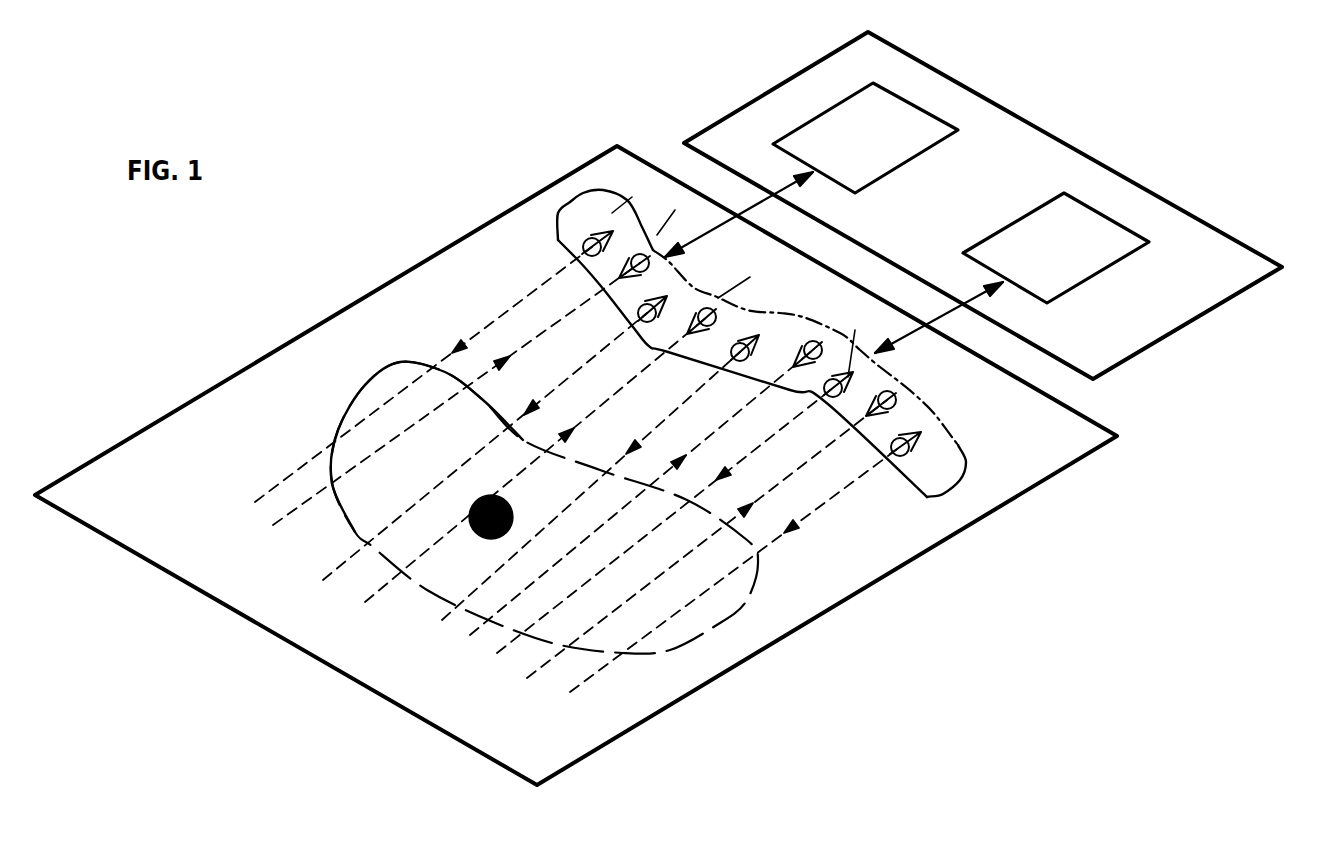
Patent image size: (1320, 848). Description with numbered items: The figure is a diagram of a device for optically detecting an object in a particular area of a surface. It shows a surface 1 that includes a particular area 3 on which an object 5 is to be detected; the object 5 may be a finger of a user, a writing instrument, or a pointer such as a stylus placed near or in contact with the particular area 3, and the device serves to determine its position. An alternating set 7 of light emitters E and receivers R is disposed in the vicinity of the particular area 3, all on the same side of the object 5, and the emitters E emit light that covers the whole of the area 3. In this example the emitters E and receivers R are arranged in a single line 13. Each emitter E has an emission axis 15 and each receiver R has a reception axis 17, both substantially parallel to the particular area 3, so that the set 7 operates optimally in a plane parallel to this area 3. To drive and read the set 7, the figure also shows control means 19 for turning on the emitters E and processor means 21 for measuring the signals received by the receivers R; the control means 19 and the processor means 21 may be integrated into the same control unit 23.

The surface 1 is at (173, 410).
The particular area 3 is at (347, 417).
The object 5 is at (490, 495).
The alternating set of emitters and receivers 7 is at (950, 426).
The single line 13 is at (598, 230).
The emission axis 15 is at (472, 340).
The reception axis 17 is at (542, 333).
The control means 19 is at (895, 112).
The processor means 21 is at (1057, 215).
The control unit 23 is at (1187, 203).